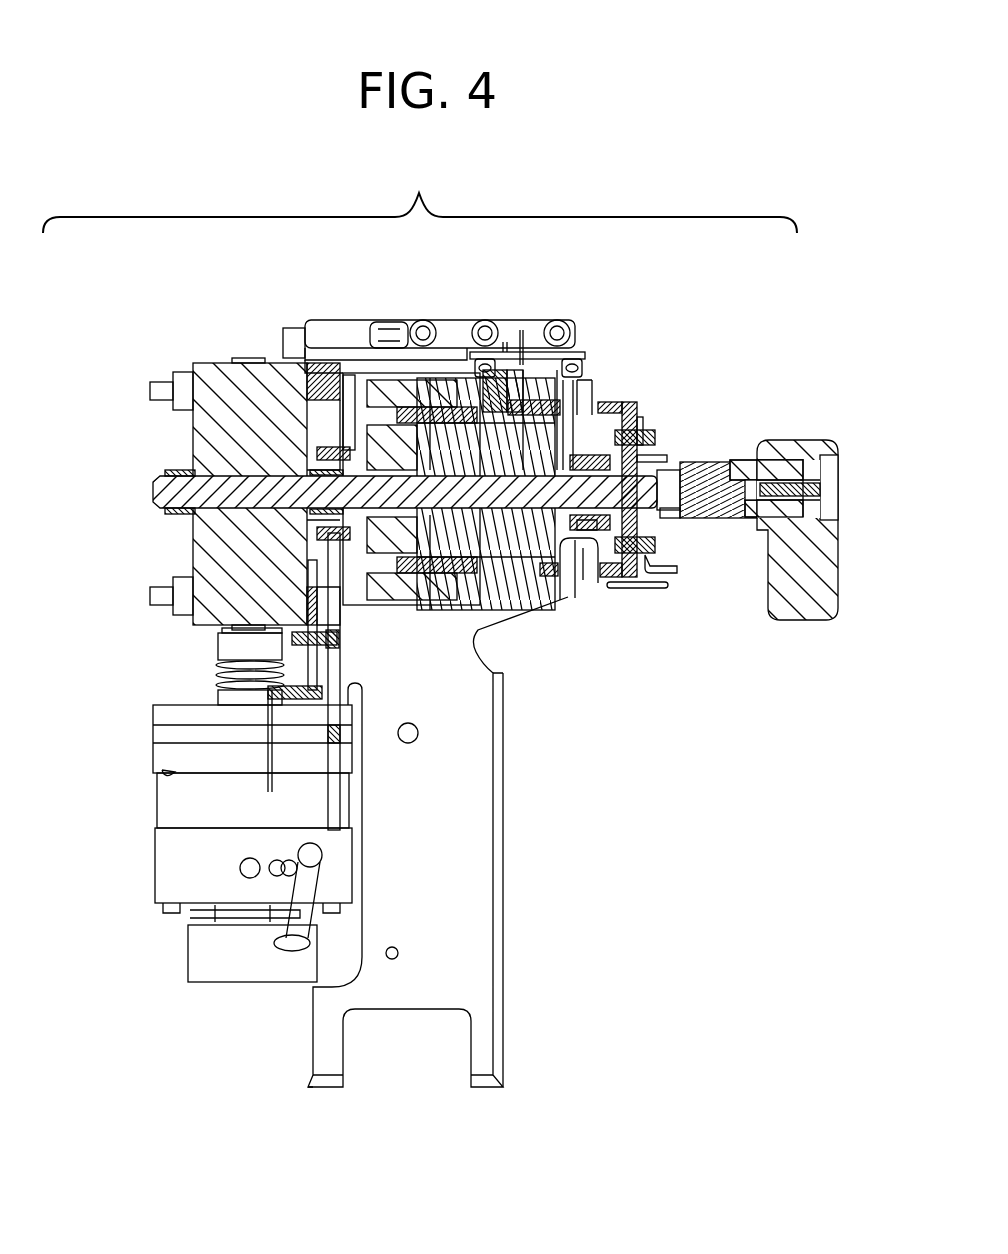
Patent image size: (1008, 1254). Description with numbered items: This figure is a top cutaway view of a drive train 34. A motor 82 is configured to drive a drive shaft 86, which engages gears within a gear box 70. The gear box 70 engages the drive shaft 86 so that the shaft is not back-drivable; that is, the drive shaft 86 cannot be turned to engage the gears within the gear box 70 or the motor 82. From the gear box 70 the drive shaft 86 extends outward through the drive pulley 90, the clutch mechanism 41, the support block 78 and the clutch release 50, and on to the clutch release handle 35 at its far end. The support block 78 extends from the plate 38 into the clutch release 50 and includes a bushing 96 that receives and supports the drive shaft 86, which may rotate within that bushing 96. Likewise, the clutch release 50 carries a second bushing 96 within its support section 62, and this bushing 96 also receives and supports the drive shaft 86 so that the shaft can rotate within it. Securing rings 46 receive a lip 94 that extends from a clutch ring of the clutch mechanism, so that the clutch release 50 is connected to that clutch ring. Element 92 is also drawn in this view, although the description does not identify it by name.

The drive train 34 is at (420, 196).
The clutch release handle 35 is at (832, 560).
The plate 38 is at (478, 957).
The clutch mechanism 41 is at (430, 560).
The securing rings 46 is at (495, 343).
The clutch release 50 is at (595, 582).
The support section 62 is at (690, 462).
The gear box 70 is at (234, 363).
The support block 78 is at (603, 445).
The motor 82 is at (220, 965).
The drive shaft 86 is at (668, 490).
The drive pulley 90 is at (368, 393).
The seal 92 is at (573, 575).
The lip 94 is at (503, 385).
The bushing 96 is at (678, 518).